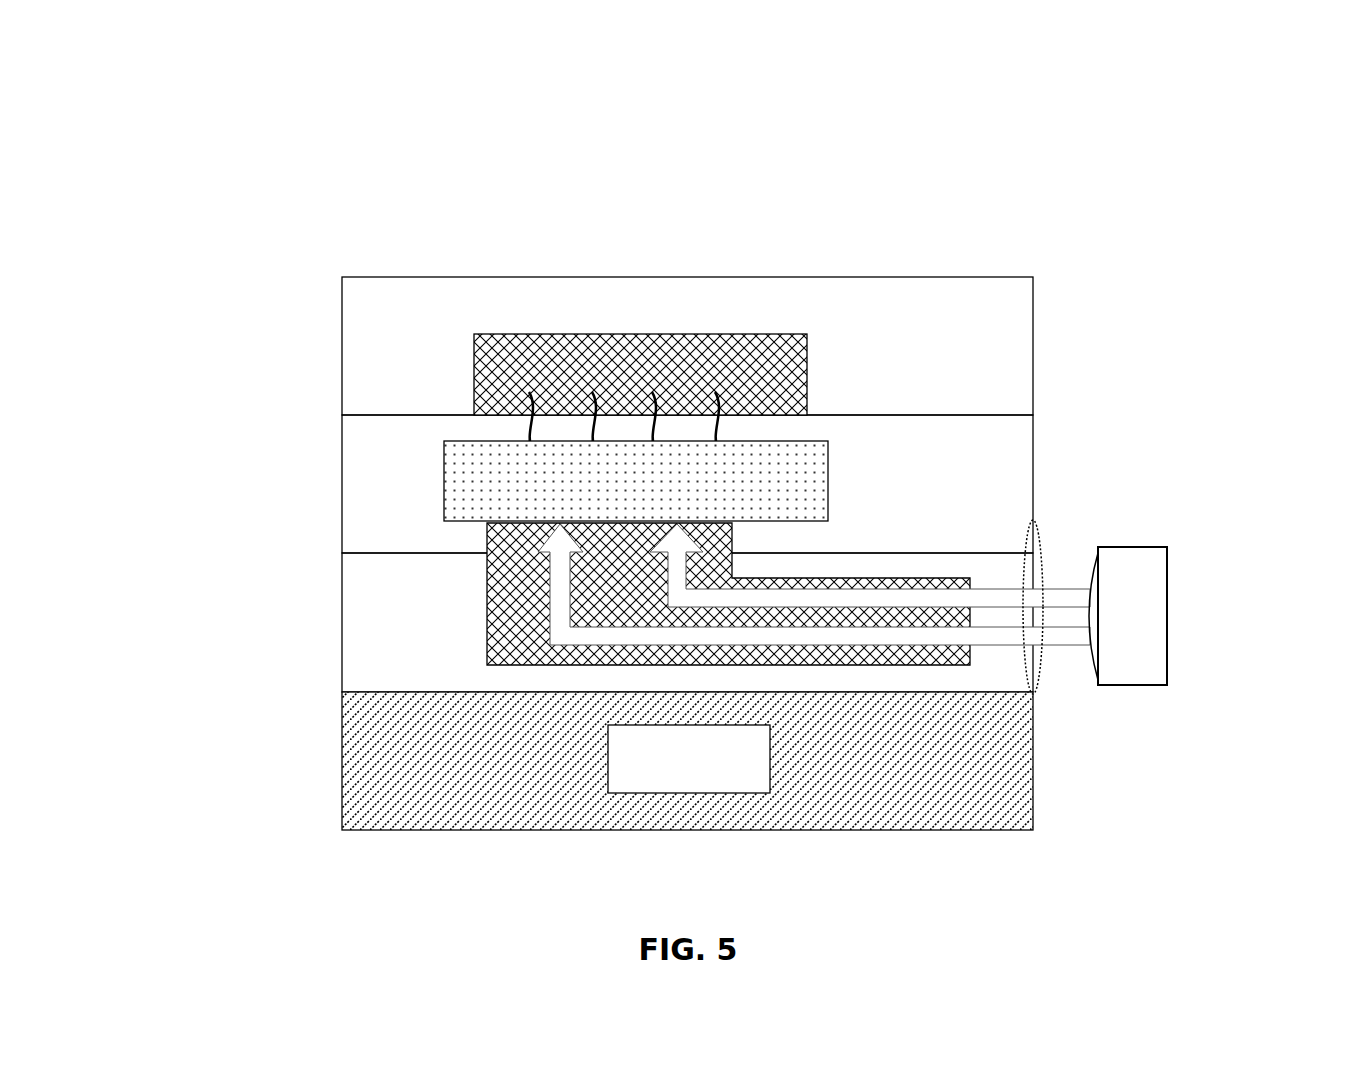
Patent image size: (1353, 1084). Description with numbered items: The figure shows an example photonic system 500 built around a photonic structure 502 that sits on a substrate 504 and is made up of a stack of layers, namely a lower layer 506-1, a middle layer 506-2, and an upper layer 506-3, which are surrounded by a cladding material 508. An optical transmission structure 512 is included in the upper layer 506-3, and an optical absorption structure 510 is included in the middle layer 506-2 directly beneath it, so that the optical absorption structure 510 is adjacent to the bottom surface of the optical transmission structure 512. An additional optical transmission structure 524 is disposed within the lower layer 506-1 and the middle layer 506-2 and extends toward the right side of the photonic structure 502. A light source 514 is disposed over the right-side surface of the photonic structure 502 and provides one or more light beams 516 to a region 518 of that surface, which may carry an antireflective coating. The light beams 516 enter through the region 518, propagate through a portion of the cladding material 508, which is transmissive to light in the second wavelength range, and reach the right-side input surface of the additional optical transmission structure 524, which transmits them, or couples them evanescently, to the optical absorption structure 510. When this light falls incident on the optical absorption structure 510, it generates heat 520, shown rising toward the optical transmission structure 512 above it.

The photonic system 500 is at (205, 68).
The photonic structure 502 is at (312, 257).
The substrate 504 is at (687, 761).
The layer 506-1 is at (325, 632).
The layer 506-2 is at (325, 483).
The layer 506-3 is at (325, 347).
The cladding material 508 is at (402, 595).
The optical absorption structure 510 is at (797, 484).
The optical transmission structure 512 is at (621, 372).
The light source 514 is at (1128, 622).
The light beams 516 is at (1047, 643).
The region 518 is at (1036, 518).
The heat 520 is at (718, 405).
The additional optical transmission structure 524 is at (687, 640).